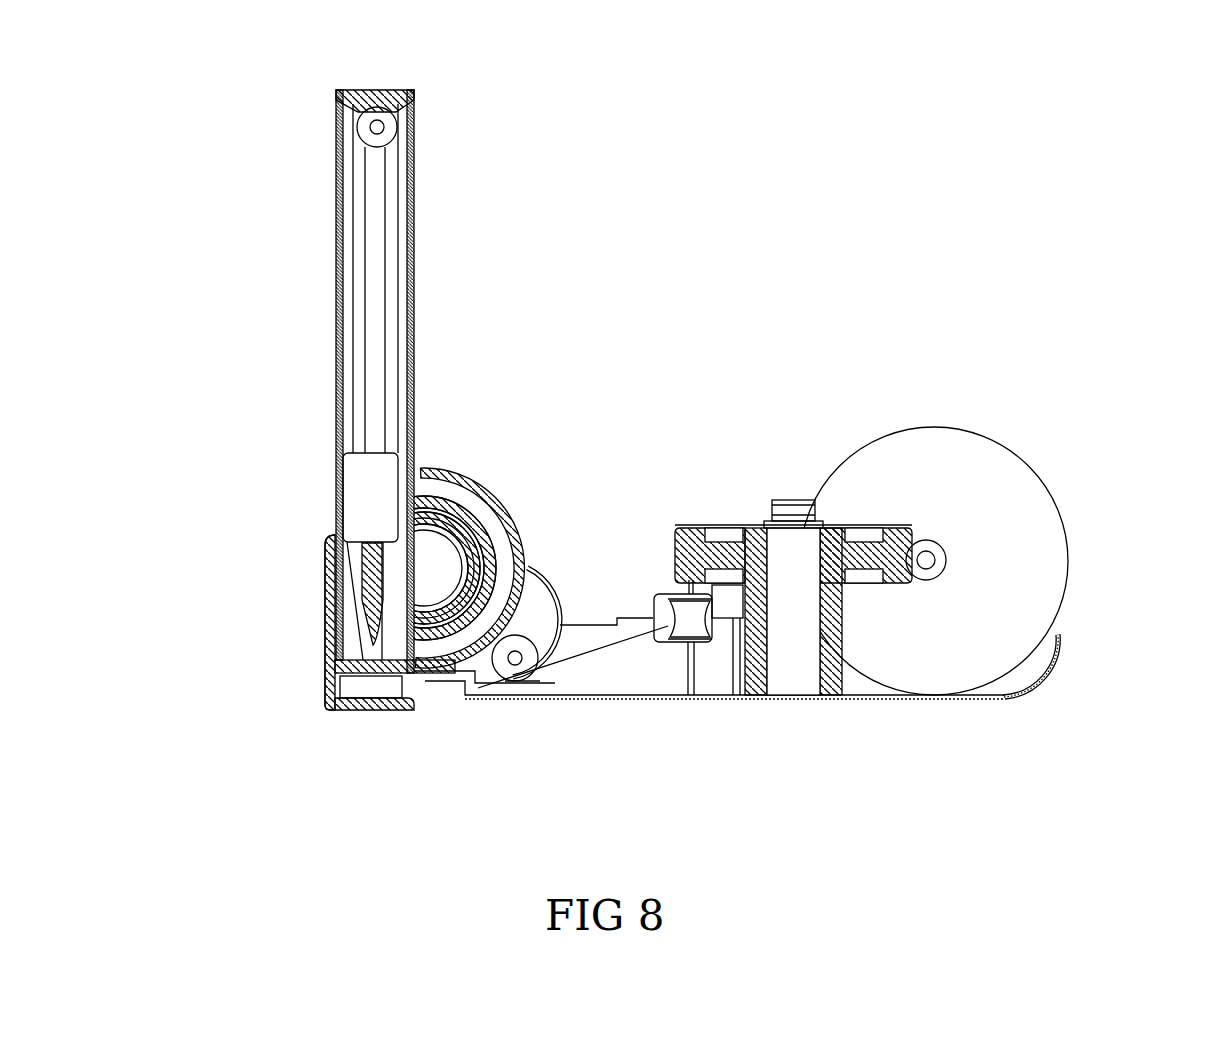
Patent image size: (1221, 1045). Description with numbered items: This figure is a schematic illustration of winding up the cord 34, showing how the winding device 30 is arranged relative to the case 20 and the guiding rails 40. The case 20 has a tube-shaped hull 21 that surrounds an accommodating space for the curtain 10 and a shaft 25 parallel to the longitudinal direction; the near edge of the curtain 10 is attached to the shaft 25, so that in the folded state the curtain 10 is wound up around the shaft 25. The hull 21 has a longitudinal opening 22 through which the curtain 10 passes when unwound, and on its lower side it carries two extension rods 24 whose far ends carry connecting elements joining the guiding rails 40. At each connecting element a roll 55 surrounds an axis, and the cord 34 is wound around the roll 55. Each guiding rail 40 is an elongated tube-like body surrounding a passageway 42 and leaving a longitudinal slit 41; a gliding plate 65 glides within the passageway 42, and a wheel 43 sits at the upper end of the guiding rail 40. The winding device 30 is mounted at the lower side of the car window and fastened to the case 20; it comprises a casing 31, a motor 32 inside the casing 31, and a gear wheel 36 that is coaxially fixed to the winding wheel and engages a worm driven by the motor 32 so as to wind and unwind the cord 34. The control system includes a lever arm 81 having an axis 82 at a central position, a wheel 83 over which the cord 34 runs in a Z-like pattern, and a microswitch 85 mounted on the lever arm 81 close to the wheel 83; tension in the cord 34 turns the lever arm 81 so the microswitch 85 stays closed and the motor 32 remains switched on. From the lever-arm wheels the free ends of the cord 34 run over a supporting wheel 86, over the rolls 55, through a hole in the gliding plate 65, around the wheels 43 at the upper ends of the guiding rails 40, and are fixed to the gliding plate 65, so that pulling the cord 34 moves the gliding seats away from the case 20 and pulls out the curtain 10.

The curtain 10 is at (463, 502).
The case 20 is at (318, 617).
The tube-shaped hull 21 is at (330, 680).
The longitudinal opening 22 is at (420, 465).
The extension rods 24 is at (333, 712).
The shaft 25 is at (463, 565).
The winding device 30 is at (1078, 647).
The casing 31 is at (513, 697).
The motor 32 is at (1028, 497).
The cord 34 is at (345, 413).
The gear wheel 36 is at (690, 543).
The guiding rails 40 is at (328, 352).
The longitudinal slit 41 is at (375, 196).
The passageway 42 is at (343, 267).
The wheel 43 is at (365, 135).
The roll 55 is at (353, 712).
The gliding plate 65 is at (353, 532).
The lever arm 81 is at (670, 618).
The axis 82 is at (690, 697).
The wheel 83 is at (680, 627).
The microswitch 85 is at (737, 597).
The supporting wheel 86 is at (500, 657).